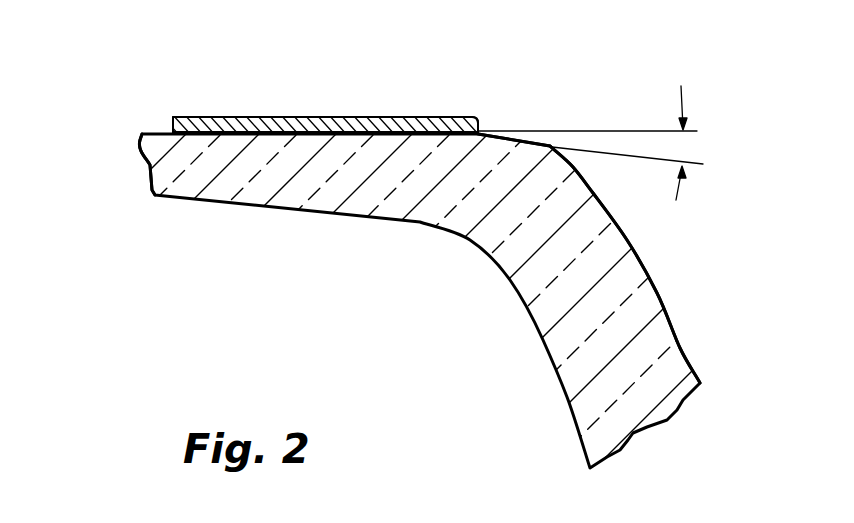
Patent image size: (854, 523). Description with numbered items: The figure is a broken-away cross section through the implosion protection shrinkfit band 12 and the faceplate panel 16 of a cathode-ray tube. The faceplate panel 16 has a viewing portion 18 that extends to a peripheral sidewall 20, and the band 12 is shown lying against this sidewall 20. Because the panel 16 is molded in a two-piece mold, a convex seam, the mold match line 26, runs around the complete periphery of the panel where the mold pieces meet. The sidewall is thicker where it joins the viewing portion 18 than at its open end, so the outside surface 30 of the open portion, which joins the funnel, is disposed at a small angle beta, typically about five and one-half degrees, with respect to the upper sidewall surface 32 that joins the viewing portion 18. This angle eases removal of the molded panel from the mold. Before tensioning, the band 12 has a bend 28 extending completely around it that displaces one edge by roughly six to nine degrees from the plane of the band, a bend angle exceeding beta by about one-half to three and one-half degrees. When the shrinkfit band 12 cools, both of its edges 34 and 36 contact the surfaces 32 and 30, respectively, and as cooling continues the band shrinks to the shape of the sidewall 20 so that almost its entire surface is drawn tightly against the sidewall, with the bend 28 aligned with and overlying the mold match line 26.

The implosion protection shrinkfit band 12 is at (257, 116).
The faceplate panel 16 is at (637, 234).
The viewing portion 18 is at (658, 293).
The peripheral sidewall 20 is at (550, 146).
The mold match line 26 is at (410, 140).
The bend 28 is at (410, 133).
The outside surface 30 is at (155, 130).
The upper sidewall surface 32 is at (519, 141).
The edge 34 is at (475, 120).
The edge 36 is at (172, 117).